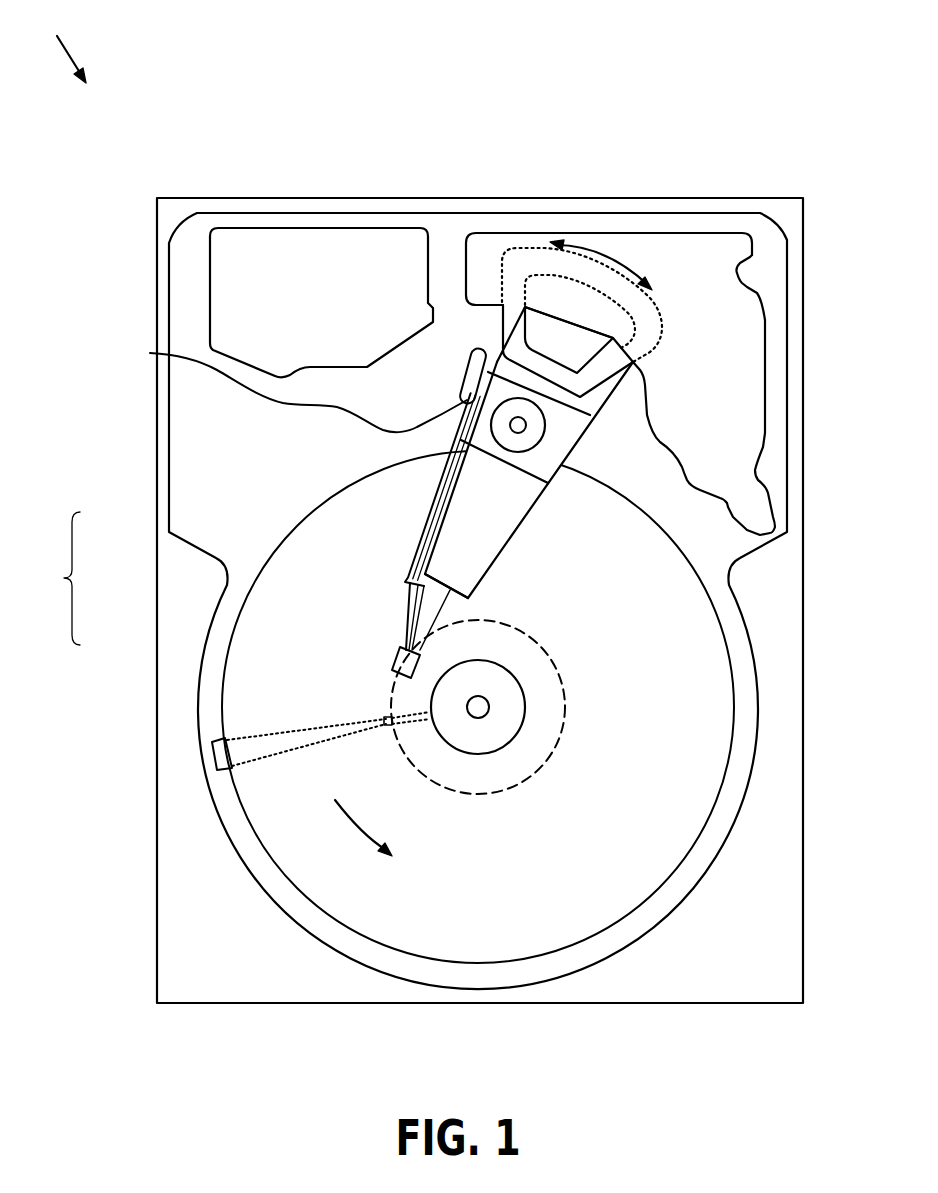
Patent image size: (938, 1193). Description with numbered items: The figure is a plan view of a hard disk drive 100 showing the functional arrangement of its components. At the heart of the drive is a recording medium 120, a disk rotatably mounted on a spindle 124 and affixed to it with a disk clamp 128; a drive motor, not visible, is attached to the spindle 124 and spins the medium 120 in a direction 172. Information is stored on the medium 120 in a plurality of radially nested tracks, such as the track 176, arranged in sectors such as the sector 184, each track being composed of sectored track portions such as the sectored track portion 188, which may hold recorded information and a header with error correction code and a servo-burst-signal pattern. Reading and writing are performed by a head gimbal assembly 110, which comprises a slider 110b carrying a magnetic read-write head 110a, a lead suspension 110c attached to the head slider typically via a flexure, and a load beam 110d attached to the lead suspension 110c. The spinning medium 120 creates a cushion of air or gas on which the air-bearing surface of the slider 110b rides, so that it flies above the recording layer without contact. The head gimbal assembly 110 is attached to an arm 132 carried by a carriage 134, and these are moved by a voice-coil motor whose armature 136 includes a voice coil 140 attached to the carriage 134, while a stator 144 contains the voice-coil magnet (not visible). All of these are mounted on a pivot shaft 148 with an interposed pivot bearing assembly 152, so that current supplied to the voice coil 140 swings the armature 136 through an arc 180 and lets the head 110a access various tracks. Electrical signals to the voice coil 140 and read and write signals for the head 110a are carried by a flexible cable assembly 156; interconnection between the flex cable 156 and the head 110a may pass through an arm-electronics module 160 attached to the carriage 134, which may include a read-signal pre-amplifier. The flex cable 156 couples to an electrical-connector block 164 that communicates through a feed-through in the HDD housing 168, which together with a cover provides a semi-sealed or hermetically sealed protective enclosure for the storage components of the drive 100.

The hard disk drive 100 is at (60, 45).
The head gimbal assembly 110 is at (250, 535).
The magnetic read-write head 110a is at (398, 657).
The slider 110b is at (405, 632).
The lead suspension 110c is at (432, 598).
The load beam 110d is at (405, 578).
The recording medium 120 is at (665, 660).
The spindle 124 is at (480, 707).
The disk clamp 128 is at (505, 723).
The arm 132 is at (470, 540).
The carriage 134 is at (537, 458).
The armature 136 is at (497, 348).
The voice coil 140 is at (513, 317).
The stator 144 is at (733, 327).
The pivot shaft 148 is at (521, 425).
The pivot bearing assembly 152 is at (533, 438).
The flexible cable assembly 156 is at (150, 353).
The arm-electronics module 160 is at (468, 392).
The electrical-connector block 164 is at (237, 300).
The HDD housing 168 is at (786, 211).
The direction 172 is at (362, 832).
The track 176 is at (558, 668).
The arc 180 is at (604, 243).
The sector 184 is at (210, 757).
The sectored track portion 188 is at (383, 722).